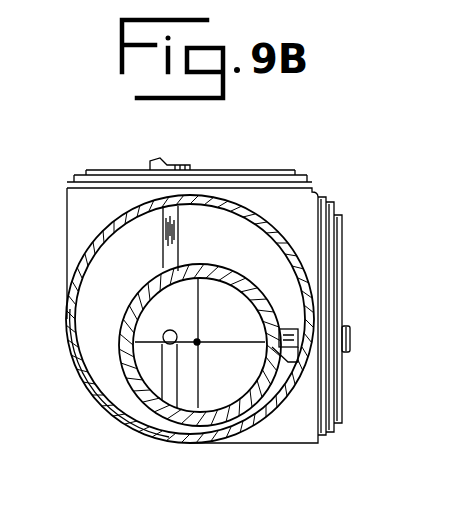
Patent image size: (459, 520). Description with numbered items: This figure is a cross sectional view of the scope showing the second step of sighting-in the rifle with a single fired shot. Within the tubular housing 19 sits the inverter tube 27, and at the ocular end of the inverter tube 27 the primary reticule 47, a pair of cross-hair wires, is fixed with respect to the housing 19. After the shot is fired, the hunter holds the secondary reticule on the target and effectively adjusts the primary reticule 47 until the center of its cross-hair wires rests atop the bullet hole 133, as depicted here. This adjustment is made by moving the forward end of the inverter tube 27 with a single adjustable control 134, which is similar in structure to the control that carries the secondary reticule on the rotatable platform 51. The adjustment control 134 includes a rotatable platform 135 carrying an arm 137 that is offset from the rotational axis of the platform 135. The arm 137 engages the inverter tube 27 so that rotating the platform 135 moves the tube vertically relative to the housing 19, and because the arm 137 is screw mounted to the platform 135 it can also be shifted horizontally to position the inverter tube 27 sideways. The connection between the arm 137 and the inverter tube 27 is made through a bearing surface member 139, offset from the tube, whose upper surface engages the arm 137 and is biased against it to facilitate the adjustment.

The tubular housing 19 is at (90, 243).
The inverter tube 27 is at (207, 264).
The primary reticule 47 is at (231, 355).
The platform 51 is at (200, 170).
The bullet hole 133 is at (197, 342).
The adjustable control 134 is at (357, 222).
The rotatable platform 135 is at (343, 416).
The arm 137 is at (288, 330).
The bearing surface member 139 is at (287, 360).